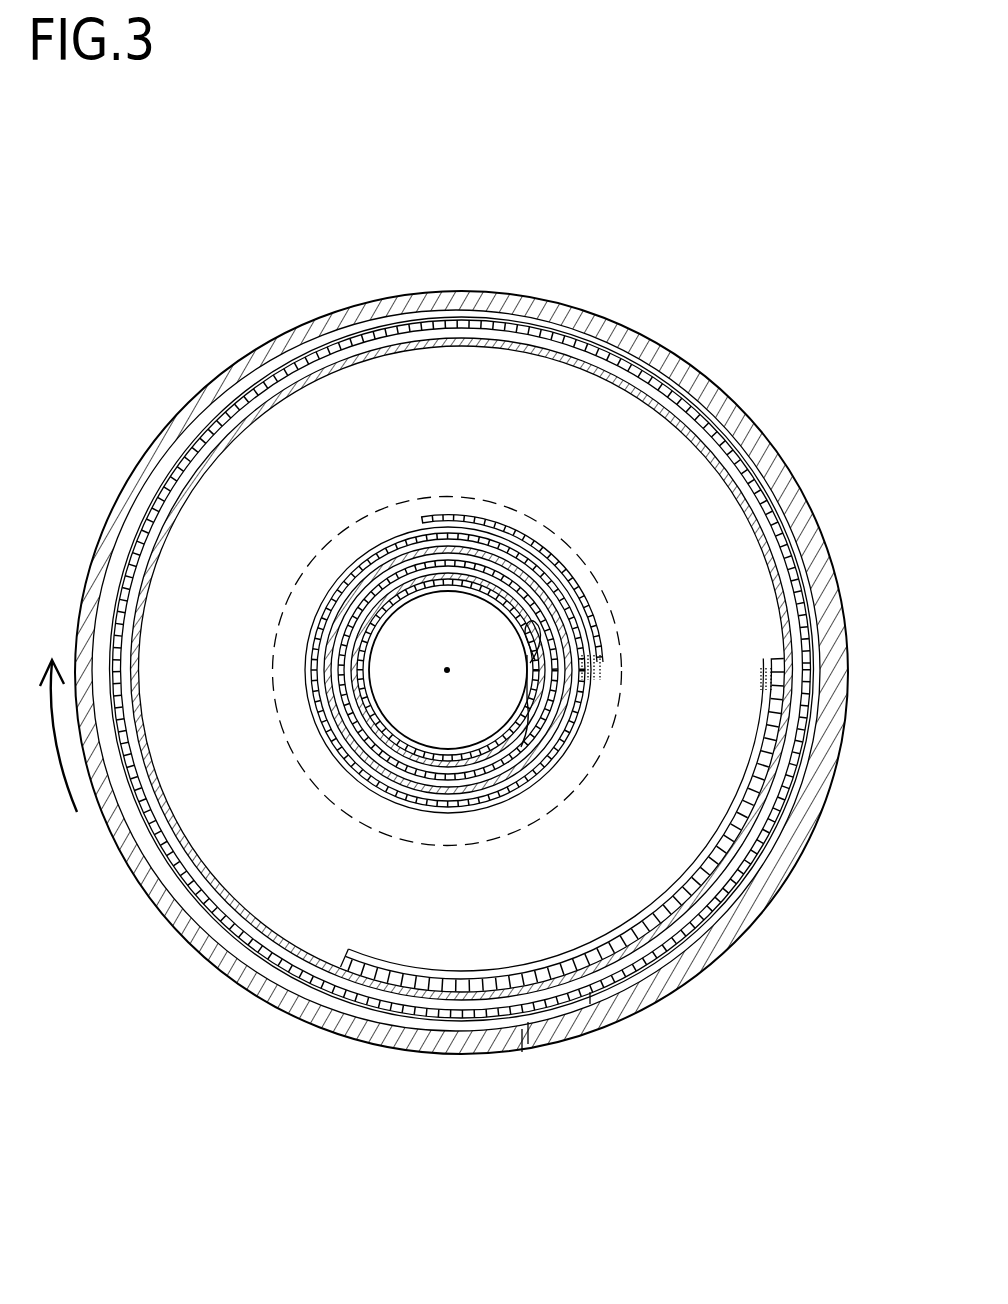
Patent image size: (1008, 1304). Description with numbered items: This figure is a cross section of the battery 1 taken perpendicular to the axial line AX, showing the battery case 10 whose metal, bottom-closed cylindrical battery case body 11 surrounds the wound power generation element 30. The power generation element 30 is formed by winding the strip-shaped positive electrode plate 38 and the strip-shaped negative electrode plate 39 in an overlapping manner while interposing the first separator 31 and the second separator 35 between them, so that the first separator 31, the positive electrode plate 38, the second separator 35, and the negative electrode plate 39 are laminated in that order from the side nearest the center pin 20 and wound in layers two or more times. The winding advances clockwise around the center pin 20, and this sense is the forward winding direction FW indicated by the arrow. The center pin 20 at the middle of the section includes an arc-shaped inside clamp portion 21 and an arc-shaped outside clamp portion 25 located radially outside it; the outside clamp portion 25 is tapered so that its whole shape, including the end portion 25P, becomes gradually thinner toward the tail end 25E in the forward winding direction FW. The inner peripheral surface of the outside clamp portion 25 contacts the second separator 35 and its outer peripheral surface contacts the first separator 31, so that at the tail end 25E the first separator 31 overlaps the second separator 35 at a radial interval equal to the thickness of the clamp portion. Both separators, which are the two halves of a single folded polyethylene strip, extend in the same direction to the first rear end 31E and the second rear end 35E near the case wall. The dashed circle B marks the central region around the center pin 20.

The battery 1 is at (685, 240).
The battery case 10 is at (485, 672).
The battery case body 11 is at (763, 437).
The power generation element 30 is at (627, 437).
The center pin 20 is at (368, 658).
The inside clamp portion 21 is at (520, 693).
The outside clamp portion 25 is at (546, 683).
The end portion 25P is at (533, 718).
The tail end 25E is at (521, 747).
The first separator 31 is at (366, 718).
The first rear end 31E is at (595, 1025).
The second separator 35 is at (382, 620).
The second rear end 35E is at (526, 1048).
The positive electrode plate 38 is at (453, 766).
The negative electrode plate 39 is at (403, 768).
The axial line AX is at (447, 670).
The inner region boundary B is at (552, 815).
The forward winding direction FW is at (67, 757).